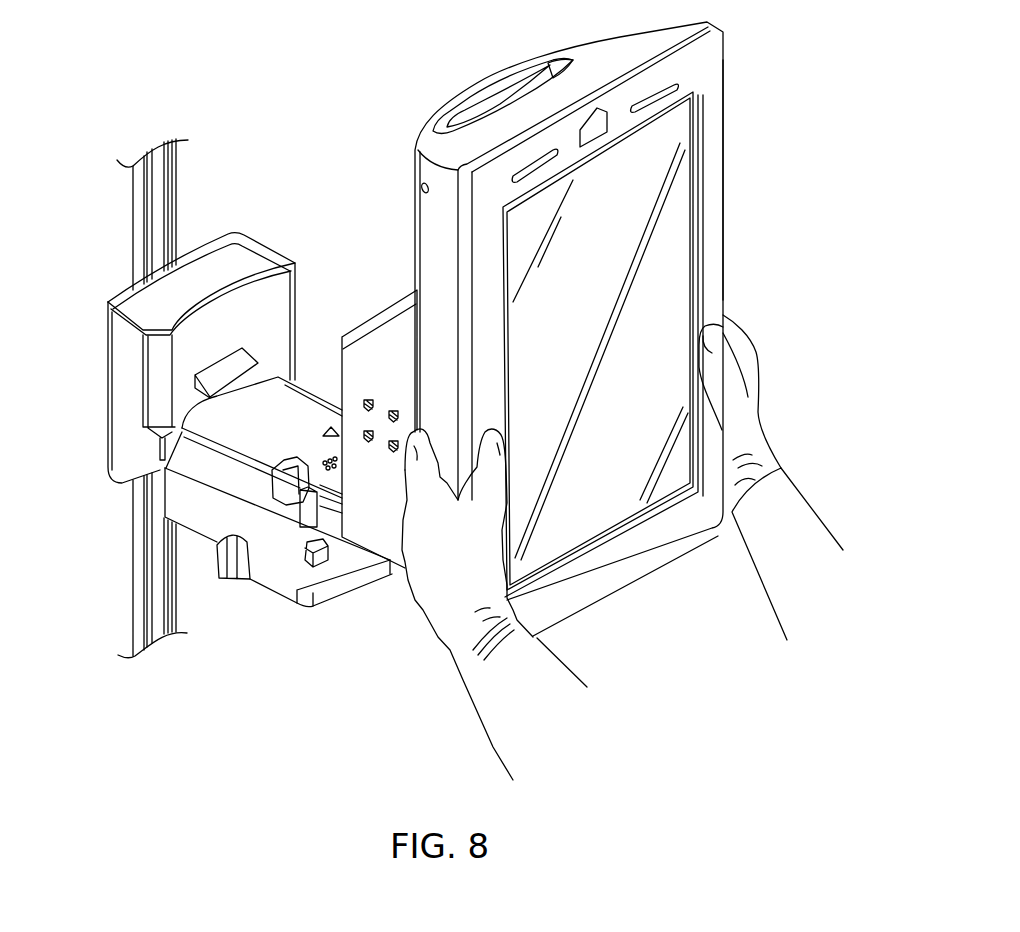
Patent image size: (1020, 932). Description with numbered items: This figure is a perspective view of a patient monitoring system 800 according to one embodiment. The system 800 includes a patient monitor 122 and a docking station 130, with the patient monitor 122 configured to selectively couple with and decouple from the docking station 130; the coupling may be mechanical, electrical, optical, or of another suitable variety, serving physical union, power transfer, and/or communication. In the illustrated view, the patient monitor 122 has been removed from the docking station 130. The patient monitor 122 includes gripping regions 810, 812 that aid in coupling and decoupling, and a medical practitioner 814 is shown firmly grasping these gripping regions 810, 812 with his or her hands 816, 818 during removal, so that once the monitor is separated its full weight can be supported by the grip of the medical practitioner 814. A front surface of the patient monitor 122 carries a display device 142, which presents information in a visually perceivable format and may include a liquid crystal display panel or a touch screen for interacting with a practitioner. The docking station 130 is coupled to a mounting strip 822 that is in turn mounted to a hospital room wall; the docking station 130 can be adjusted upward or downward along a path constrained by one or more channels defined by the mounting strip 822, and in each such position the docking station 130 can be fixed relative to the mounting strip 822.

The patient monitoring system 800 is at (441, 398).
The mounting strip 822 is at (133, 215).
The docking station 130 is at (242, 233).
The gripping region 810 is at (441, 432).
The patient monitor 122 is at (628, 326).
The display device 142 is at (593, 495).
The gripping region 812 is at (731, 298).
The medical practitioner 814 is at (800, 533).
The hand 816 is at (460, 558).
The hand 818 is at (748, 414).